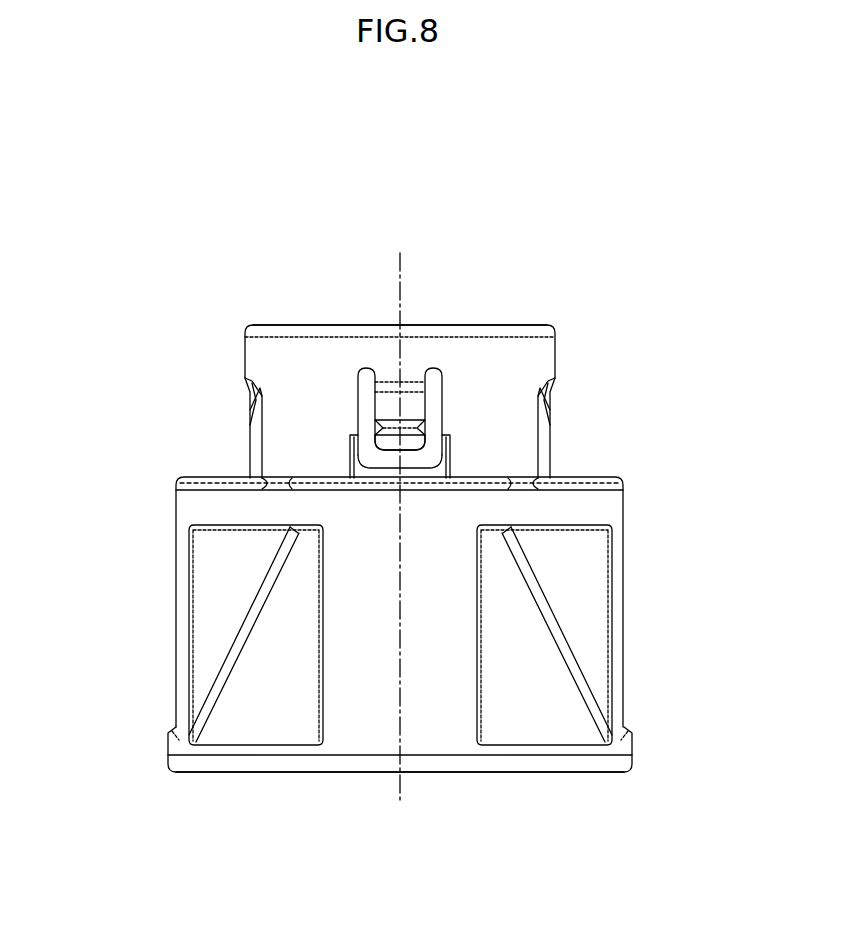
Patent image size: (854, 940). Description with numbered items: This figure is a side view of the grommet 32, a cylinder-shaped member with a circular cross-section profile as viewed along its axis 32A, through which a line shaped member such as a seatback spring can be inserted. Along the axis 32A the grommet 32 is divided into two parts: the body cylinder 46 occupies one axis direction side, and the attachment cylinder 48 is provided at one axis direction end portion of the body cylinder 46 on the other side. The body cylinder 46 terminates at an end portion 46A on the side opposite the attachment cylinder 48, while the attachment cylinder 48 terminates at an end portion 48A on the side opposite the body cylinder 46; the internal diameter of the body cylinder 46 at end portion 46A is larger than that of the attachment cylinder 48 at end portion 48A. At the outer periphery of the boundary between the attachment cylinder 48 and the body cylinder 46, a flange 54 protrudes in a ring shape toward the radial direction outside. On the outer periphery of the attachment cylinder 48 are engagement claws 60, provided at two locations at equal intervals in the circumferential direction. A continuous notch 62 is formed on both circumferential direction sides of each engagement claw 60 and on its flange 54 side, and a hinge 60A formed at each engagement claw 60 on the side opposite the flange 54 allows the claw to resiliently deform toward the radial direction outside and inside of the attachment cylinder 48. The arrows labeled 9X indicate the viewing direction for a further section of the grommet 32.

The grommet 32 is at (647, 302).
The axis 32A is at (402, 266).
The body cylinder 46 is at (633, 745).
The end portion 46A is at (500, 773).
The attachment cylinder 48 is at (557, 345).
The end portion 48A is at (523, 325).
The flange 54 is at (615, 505).
The engagement claw 60 is at (426, 408).
The hinge 60A is at (437, 372).
The notch 62 is at (433, 427).
The section line indicator 9X is at (165, 476).